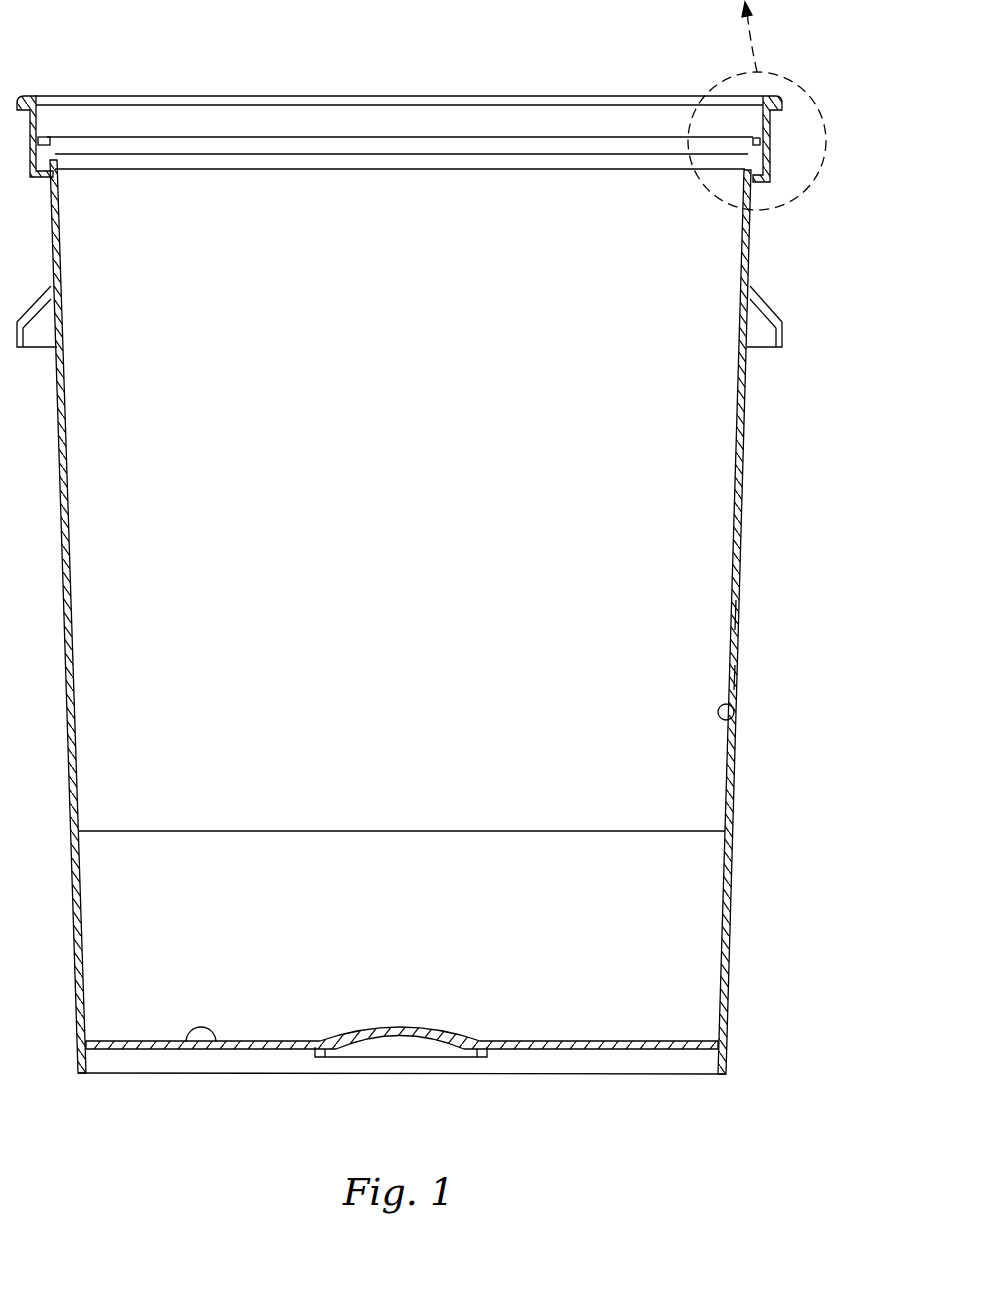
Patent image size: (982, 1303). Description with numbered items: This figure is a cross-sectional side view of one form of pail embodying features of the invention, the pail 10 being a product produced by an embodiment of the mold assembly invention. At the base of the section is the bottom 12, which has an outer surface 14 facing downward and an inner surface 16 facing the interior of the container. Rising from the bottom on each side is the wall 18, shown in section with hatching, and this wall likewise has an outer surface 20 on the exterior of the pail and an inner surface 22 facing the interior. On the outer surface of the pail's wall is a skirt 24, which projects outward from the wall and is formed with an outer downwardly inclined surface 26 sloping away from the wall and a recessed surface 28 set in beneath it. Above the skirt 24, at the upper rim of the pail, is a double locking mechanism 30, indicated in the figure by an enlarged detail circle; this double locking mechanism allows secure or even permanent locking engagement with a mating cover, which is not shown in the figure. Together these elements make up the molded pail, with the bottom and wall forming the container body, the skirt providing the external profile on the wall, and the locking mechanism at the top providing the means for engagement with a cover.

The pail 10 is at (762, 466).
The bottom 12 is at (146, 1061).
The outer surface 14 is at (593, 1045).
The inner surface 16 is at (216, 1042).
The wall 18 is at (755, 668).
The outer surface 20 is at (737, 617).
The inner surface 22 is at (735, 720).
The skirt 24 is at (801, 333).
The outer downwardly inclined surface 26 is at (768, 312).
The recessed surface 28 is at (766, 322).
The double locking mechanism 30 is at (788, 121).